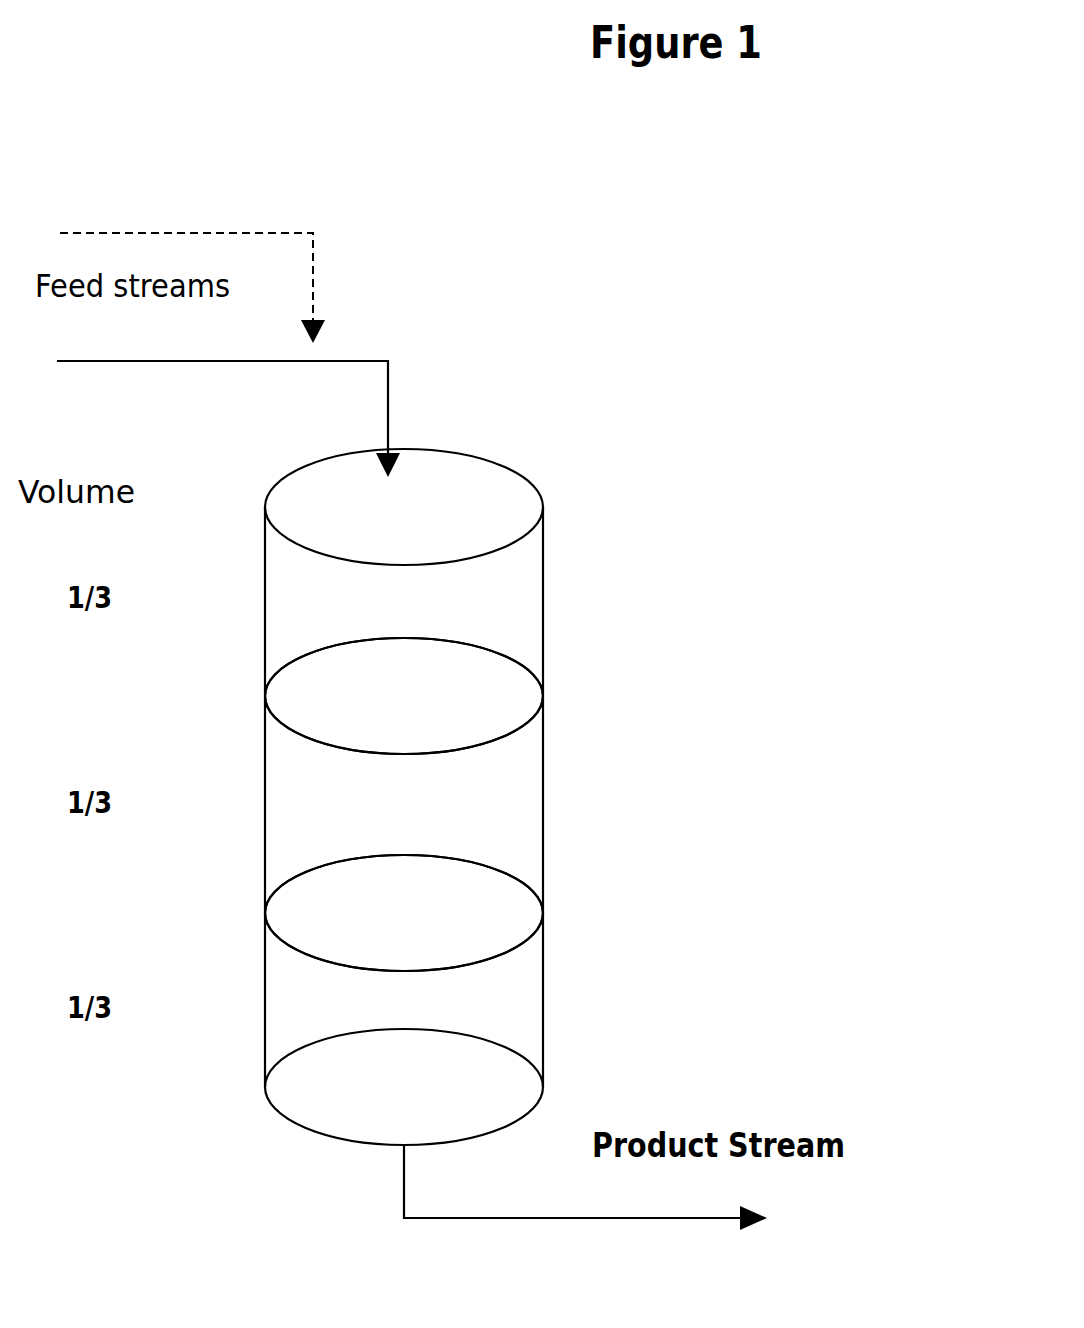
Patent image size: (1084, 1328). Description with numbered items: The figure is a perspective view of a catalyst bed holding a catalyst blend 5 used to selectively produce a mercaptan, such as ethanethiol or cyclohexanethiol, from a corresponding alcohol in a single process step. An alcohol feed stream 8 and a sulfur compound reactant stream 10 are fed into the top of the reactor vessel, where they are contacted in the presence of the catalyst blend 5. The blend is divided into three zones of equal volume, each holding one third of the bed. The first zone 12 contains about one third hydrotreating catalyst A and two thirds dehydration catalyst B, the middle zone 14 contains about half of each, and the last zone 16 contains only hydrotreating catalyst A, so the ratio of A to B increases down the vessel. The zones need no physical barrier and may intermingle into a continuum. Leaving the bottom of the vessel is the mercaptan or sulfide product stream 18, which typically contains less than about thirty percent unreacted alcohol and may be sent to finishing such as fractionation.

The catalyst blend 5 is at (505, 797).
The alcohol feed stream 8 is at (192, 270).
The sulfur compound reactant stream 10 is at (228, 395).
The first zone 12 is at (507, 591).
The middle zone 14 is at (514, 812).
The last zone 16 is at (514, 1005).
The mercaptan or sulfide stream 18 is at (585, 1188).